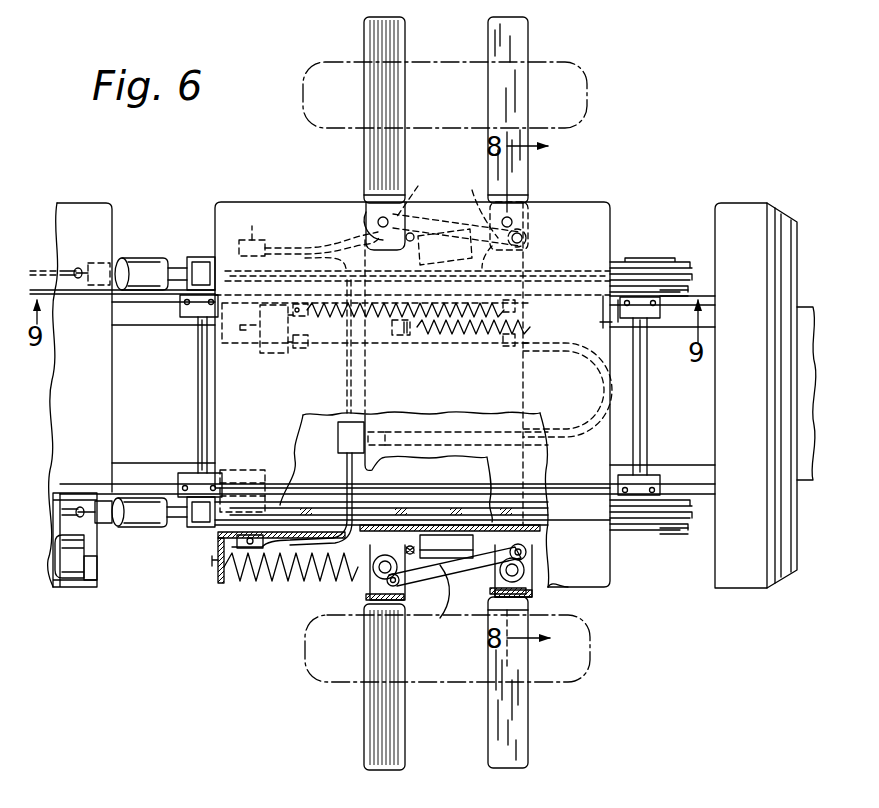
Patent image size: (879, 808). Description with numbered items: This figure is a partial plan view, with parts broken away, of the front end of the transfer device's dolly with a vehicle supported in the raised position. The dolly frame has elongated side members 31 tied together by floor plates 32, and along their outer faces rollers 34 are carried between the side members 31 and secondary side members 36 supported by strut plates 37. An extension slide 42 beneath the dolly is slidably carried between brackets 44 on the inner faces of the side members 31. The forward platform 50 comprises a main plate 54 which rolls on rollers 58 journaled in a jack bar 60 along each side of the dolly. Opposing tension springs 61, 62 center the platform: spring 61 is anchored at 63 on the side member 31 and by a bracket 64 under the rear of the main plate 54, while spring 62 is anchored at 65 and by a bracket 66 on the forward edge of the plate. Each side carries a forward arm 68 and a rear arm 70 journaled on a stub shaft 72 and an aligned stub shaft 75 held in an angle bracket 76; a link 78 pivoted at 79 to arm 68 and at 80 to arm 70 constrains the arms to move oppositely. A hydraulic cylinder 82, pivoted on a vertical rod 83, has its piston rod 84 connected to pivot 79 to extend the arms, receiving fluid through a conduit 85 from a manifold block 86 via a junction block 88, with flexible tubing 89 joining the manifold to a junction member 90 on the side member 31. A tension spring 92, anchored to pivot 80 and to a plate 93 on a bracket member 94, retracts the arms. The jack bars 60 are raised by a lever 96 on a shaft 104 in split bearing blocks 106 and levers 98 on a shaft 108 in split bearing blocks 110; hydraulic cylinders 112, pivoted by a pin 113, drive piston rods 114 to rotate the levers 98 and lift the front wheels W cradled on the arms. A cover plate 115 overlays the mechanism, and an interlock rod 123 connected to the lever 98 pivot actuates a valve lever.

The front wheels W is at (596, 86).
The side members 31 is at (112, 306).
The floor plates 32 is at (63, 218).
The rollers 34 is at (80, 565).
The secondary side members 36 is at (75, 590).
The strut plates 37 is at (90, 585).
The extension slide 42 is at (806, 304).
The brackets 44 is at (137, 322).
The forward platform 50 is at (614, 204).
The main plate 54 is at (535, 470).
The rollers 58 is at (328, 512).
The jack bar 60 is at (628, 268).
The tension spring 61 is at (474, 338).
The tension spring 62 is at (380, 308).
The anchor 63 is at (606, 320).
The bracket 64 is at (400, 336).
The anchor 65 is at (302, 318).
The bracket 66 is at (532, 300).
The forward arm 68 is at (520, 44).
The rear arm 70 is at (382, 40).
The stub shaft 72 is at (378, 222).
The stub shaft 75 is at (372, 578).
The angle bracket 76 is at (386, 533).
The link 78 is at (437, 625).
The pivot 79 is at (528, 236).
The pivot 80 is at (412, 600).
The hydraulic cylinder 82 is at (436, 230).
The vertical rod 83 is at (411, 242).
The piston rod 84 is at (496, 548).
The conduit 85 is at (356, 234).
The manifold block 86 is at (338, 436).
The junction block 88 is at (252, 592).
The flexible tubing 89 is at (576, 382).
The junction member 90 is at (270, 354).
The tension spring 92 is at (284, 590).
The plate 93 is at (214, 580).
The bracket member 94 is at (218, 540).
The lever 96 is at (690, 286).
The levers 98 is at (233, 530).
The shaft 104 is at (644, 385).
The split bearing blocks 106 is at (652, 318).
The shaft 108 is at (198, 378).
The split bearing blocks 110 is at (188, 317).
The hydraulic cylinders 112 is at (127, 272).
The pin 113 is at (104, 524).
The piston rods 114 is at (186, 258).
The cover plate 115 is at (612, 584).
The interlock rod 123 is at (56, 266).